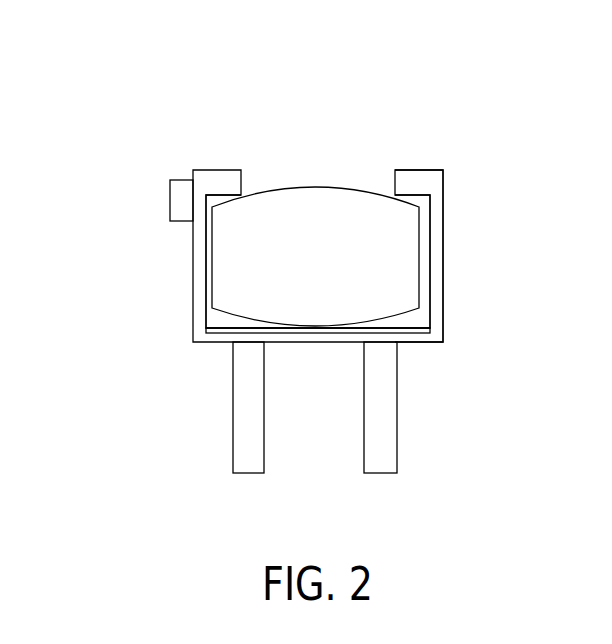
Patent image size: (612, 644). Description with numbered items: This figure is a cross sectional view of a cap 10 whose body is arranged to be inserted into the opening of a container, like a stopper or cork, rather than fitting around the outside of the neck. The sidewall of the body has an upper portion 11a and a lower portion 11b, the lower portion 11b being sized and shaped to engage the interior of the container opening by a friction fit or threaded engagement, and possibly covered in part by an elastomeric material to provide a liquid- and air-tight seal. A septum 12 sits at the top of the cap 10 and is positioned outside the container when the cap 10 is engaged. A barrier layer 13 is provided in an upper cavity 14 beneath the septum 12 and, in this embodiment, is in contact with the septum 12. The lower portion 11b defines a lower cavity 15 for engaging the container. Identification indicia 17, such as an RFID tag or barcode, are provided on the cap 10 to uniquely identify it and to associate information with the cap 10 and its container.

The cap 10 is at (110, 98).
The upper portion 11a is at (435, 242).
The lower portion 11b is at (380, 408).
The septum 12 is at (333, 205).
The barrier layer 13 is at (320, 338).
The upper cavity 14 is at (243, 191).
The lower cavity 15 is at (282, 450).
The identification indicia 17 is at (178, 202).